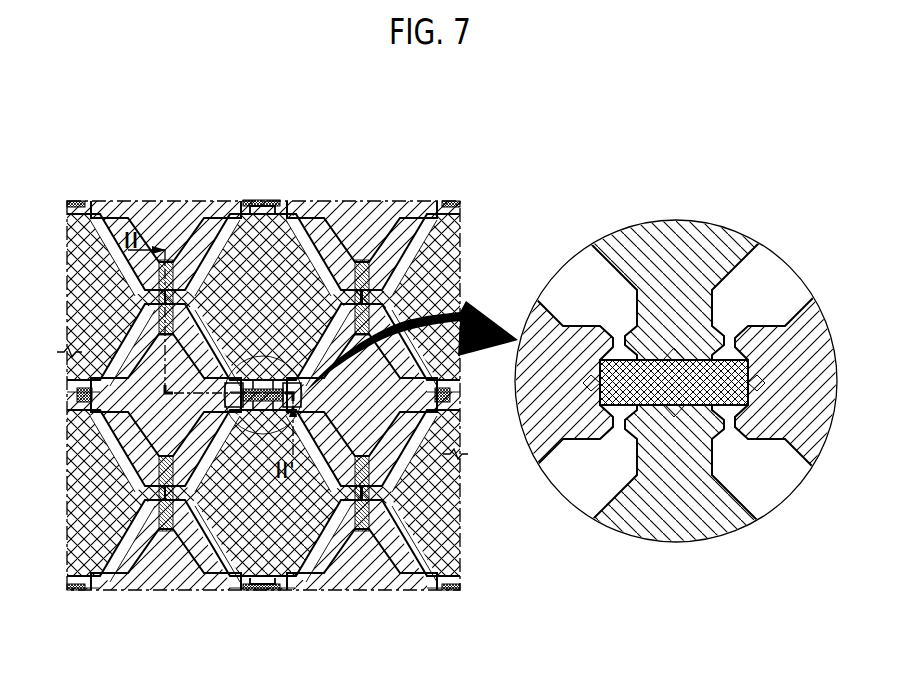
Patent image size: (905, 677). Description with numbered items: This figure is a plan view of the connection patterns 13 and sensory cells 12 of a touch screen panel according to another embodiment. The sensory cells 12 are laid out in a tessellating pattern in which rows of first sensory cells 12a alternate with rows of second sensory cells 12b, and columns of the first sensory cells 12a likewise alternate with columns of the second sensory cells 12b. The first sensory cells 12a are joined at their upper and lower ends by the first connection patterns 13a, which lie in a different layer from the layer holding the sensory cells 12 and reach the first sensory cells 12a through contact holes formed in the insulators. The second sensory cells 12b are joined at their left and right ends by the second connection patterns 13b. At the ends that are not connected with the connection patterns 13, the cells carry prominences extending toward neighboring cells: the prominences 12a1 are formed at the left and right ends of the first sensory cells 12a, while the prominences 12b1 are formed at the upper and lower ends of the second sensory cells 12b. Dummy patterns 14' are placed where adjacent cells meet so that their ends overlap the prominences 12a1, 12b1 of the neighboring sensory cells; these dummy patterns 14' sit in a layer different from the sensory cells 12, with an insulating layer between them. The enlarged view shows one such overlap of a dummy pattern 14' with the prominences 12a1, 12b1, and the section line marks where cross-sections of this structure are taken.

The sensory cells 12 is at (383, 127).
The first sensory cells 12a is at (287, 283).
The second sensory cells 12b is at (343, 286).
The prominences 12a1 is at (250, 404).
The prominences 12b1 is at (278, 407).
The connection patterns 13 is at (235, 127).
The first connection patterns 13a is at (153, 288).
The second connection patterns 13b is at (190, 357).
The dummy patterns 14' is at (415, 330).